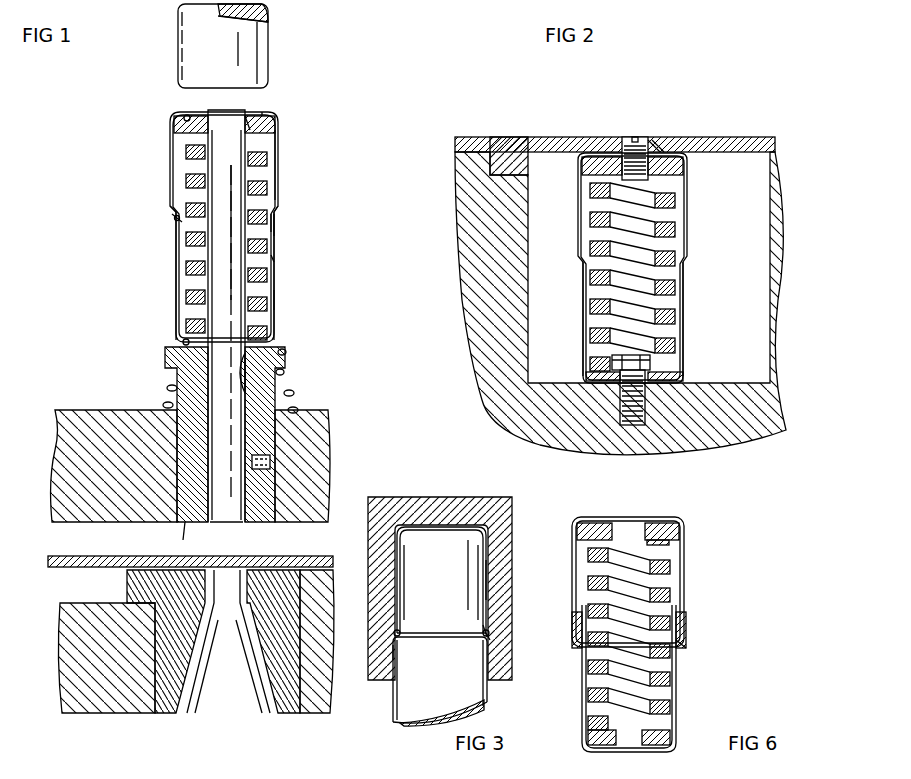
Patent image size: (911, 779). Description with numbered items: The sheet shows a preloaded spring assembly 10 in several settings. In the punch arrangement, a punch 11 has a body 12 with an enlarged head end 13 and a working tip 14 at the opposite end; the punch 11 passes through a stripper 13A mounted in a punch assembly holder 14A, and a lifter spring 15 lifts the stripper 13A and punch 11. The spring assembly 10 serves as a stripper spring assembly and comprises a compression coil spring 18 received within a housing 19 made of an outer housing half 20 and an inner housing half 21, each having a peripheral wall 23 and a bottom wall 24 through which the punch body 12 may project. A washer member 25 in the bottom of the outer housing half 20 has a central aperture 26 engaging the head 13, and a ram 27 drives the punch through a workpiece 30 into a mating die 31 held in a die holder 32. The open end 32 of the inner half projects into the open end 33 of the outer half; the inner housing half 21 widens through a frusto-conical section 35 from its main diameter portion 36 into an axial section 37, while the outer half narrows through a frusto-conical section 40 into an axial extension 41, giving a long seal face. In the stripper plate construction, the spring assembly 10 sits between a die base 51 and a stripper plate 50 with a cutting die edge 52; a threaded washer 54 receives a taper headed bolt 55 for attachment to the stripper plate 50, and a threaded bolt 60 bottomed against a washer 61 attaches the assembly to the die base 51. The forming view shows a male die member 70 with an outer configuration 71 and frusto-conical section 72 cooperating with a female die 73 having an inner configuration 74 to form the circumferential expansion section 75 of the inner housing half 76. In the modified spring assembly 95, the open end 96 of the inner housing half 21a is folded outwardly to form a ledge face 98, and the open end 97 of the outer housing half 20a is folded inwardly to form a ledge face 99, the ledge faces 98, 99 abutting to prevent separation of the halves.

In FIG. 1, the preloaded spring assembly 10 is at (300, 178).
In FIG. 2, the preloaded spring assembly 10 is at (705, 178).
In FIG. 1, the punch 11 is at (228, 430).
In FIG. 1, the body 12 is at (216, 282).
In FIG. 1, the enlarged head end 13 is at (222, 112).
In FIG. 1, the stripper 13A is at (196, 524).
In FIG. 1, the working tip 14 is at (262, 524).
In FIG. 1, the punch assembly holder 14A is at (322, 412).
In FIG. 1, the lifter spring 15 is at (292, 368).
In FIG. 1, the compression coil spring 18 is at (262, 313).
In FIG. 2, the compression coil spring 18 is at (682, 232).
In FIG. 1, the housing 19 is at (155, 160).
In FIG. 1, the outer housing half 20 is at (170, 136).
In FIG. 2, the outer housing half 20 is at (580, 207).
In FIG. 1, the inner housing half 21 is at (178, 262).
In FIG. 2, the inner housing half 21 is at (585, 328).
In FIG. 1, the peripheral wall 23 is at (280, 151).
In FIG. 1, the bottom wall 24 is at (188, 116).
In FIG. 1, the washer member 25 is at (270, 123).
In FIG. 1, the central aperture 26 is at (252, 114).
In FIG. 1, the ram 27 is at (255, 46).
In FIG. 1, the workpiece 30 is at (116, 556).
In FIG. 1, the mating die 31 is at (130, 600).
In FIG. 1, the die holder / open end of inner housing 32 is at (175, 206).
In FIG. 1, the open end of outer housing half 33 is at (283, 262).
In FIG. 1, the frusto-conical section 35 is at (172, 216).
In FIG. 1, the main diameter portion 36 is at (276, 300).
In FIG. 1, the axial section 37 is at (282, 218).
In FIG. 1, the diameter decreasing frusto-conical section 40 is at (282, 228).
In FIG. 1, the axial extension 41 is at (285, 237).
In FIG. 2, the stripper plate 50 is at (560, 137).
In FIG. 2, the die base 51 is at (512, 405).
In FIG. 2, the cutting die edge 52 is at (509, 137).
In FIG. 2, the threaded washer 54 is at (656, 150).
In FIG. 2, the taper headed bolt 55 is at (641, 137).
In FIG. 2, the threaded bolt 60 is at (650, 400).
In FIG. 2, the washer 61 is at (672, 376).
In FIG. 3, the male die member 70 is at (425, 700).
In FIG. 3, the outer configuration 71 is at (498, 640).
In FIG. 3, the frusto-conical section 72 is at (398, 650).
In FIG. 3, the female die 73 is at (478, 506).
In FIG. 3, the inner configuration 74 is at (400, 632).
In FIG. 3, the circumferential expansion section 75 is at (495, 632).
In FIG. 3, the inner housing half 76 is at (490, 570).
In FIG. 6, the outer housing half 20a is at (690, 532).
In FIG. 6, the inner housing half 21a is at (680, 700).
In FIG. 6, the spring assembly 95 is at (700, 625).
In FIG. 6, the open end 96 is at (688, 600).
In FIG. 6, the open end 97 is at (688, 646).
In FIG. 6, the ledge face 98 is at (688, 620).
In FIG. 6, the ledge face 99 is at (575, 620).